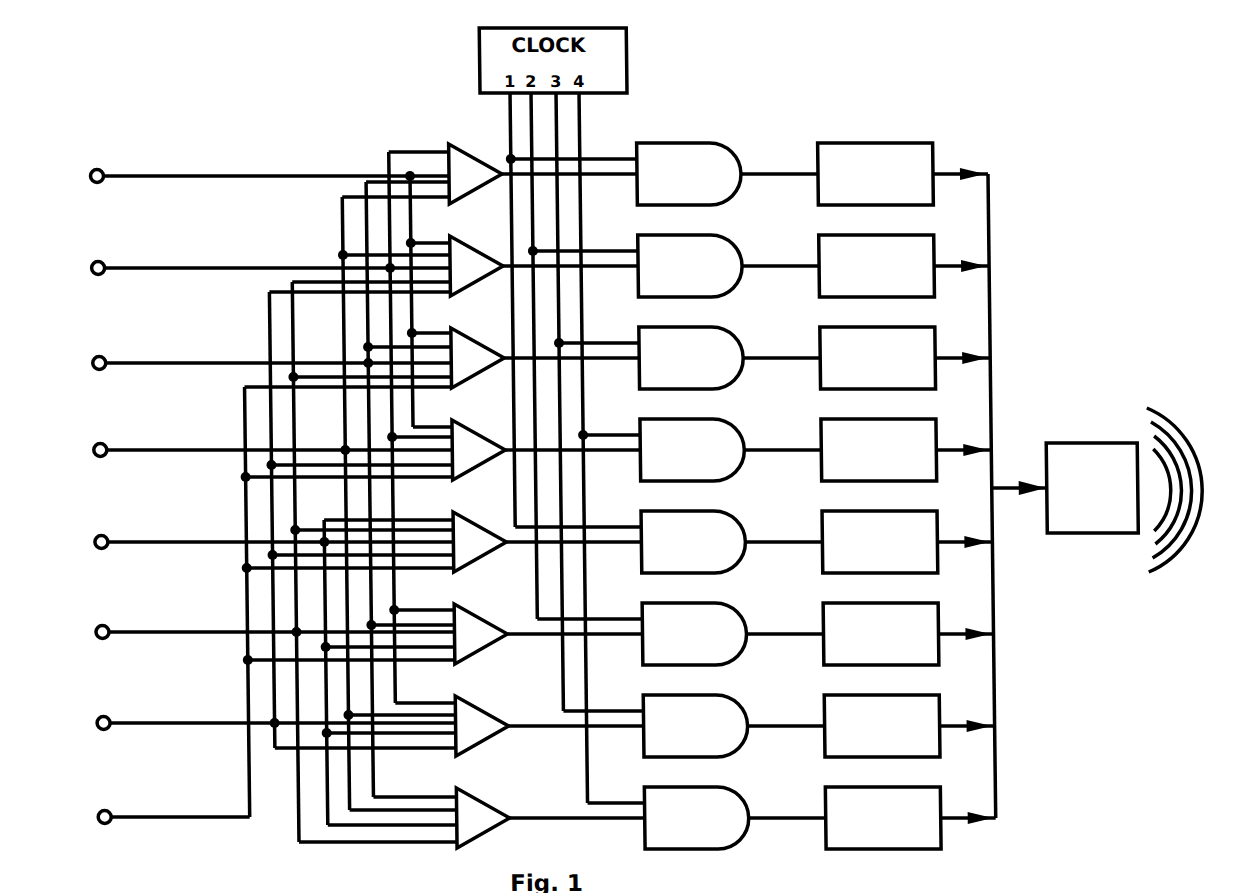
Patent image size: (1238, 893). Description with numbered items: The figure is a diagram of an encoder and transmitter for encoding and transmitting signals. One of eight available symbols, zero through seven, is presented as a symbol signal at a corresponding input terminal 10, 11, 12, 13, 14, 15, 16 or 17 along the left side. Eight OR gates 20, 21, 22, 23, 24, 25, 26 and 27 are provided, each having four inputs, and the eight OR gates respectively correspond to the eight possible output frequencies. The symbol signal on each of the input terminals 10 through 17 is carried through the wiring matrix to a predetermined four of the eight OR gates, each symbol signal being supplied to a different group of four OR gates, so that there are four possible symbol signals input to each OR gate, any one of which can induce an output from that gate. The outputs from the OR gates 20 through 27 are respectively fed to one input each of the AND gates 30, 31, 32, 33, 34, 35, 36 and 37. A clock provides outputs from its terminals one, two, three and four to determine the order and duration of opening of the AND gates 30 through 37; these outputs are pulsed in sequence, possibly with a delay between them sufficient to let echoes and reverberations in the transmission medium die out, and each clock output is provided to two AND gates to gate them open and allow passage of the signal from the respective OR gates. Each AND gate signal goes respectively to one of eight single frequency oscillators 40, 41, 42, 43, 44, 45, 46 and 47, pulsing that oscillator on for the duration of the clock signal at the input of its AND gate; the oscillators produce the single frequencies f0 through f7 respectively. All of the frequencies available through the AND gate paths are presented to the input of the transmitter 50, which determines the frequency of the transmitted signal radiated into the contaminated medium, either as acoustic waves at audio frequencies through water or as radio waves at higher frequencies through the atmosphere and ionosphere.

The input terminal 10 is at (103, 172).
The input terminal 11 is at (103, 264).
The input terminal 12 is at (103, 359).
The input terminal 13 is at (103, 446).
The input terminal 14 is at (103, 538).
The input terminal 15 is at (103, 628).
The input terminal 16 is at (103, 719).
The input terminal 17 is at (103, 813).
The OR gate 20 is at (463, 153).
The OR gate 21 is at (463, 245).
The OR gate 22 is at (463, 337).
The OR gate 23 is at (463, 429).
The OR gate 24 is at (463, 521).
The OR gate 25 is at (463, 613).
The OR gate 26 is at (463, 705).
The OR gate 27 is at (463, 797).
The AND gate 30 is at (694, 143).
The AND gate 31 is at (694, 235).
The AND gate 32 is at (694, 327).
The AND gate 33 is at (694, 419).
The AND gate 34 is at (694, 511).
The AND gate 35 is at (694, 603).
The AND gate 36 is at (694, 695).
The AND gate 37 is at (694, 787).
The single frequency oscillator 40 is at (834, 143).
The single frequency oscillator 41 is at (834, 235).
The single frequency oscillator 42 is at (834, 327).
The single frequency oscillator 43 is at (834, 419).
The single frequency oscillator 44 is at (834, 511).
The single frequency oscillator 45 is at (834, 603).
The single frequency oscillator 46 is at (834, 695).
The single frequency oscillator 47 is at (834, 787).
The transmitter 50 is at (1076, 443).